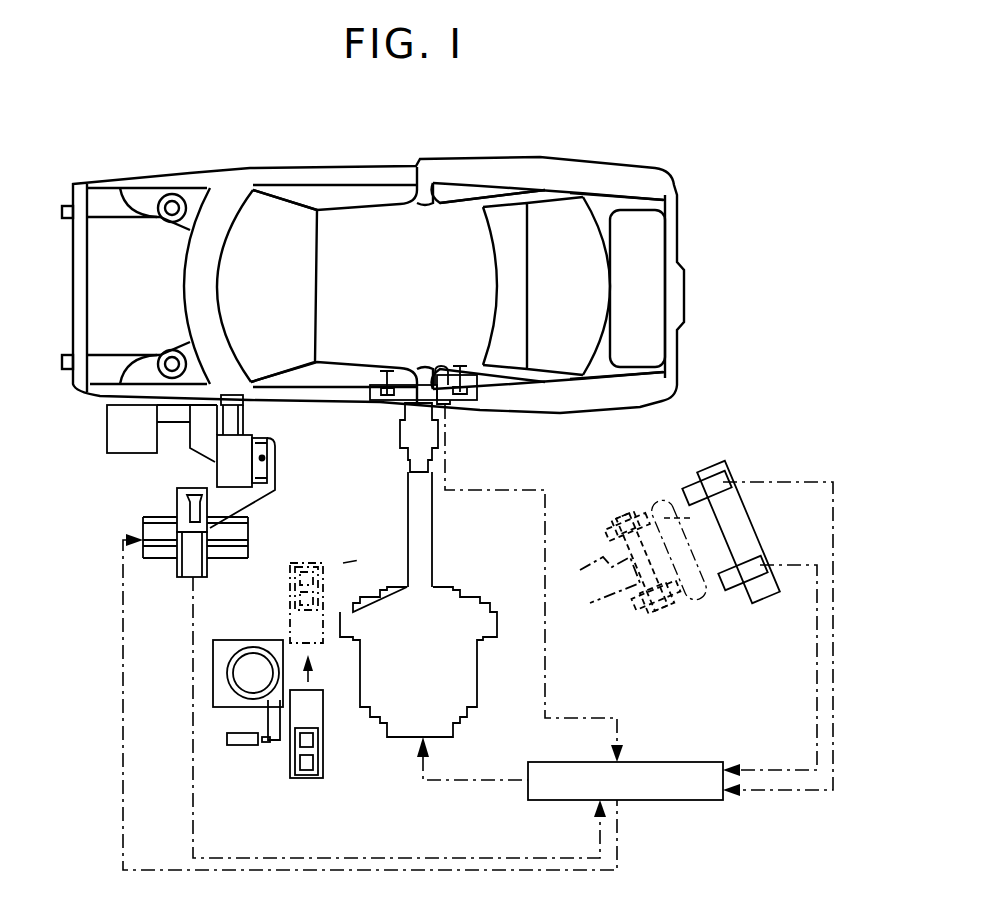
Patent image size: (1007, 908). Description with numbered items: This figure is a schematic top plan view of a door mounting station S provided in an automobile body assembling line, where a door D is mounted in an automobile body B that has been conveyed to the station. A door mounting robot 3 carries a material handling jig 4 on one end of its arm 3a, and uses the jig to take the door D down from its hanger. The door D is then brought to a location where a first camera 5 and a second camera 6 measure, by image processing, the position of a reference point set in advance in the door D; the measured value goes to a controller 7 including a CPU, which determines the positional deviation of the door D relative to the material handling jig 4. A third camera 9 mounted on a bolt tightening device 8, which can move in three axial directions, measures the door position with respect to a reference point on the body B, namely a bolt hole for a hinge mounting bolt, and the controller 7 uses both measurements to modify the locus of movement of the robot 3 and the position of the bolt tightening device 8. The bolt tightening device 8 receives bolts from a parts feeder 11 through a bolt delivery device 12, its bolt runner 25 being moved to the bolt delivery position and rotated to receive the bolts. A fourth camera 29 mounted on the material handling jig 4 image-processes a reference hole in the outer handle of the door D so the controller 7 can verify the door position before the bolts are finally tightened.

The door mounting station S is at (407, 115).
The door D is at (325, 174).
The automobile body B is at (555, 174).
The door mounting robot 3 is at (477, 683).
The arm 3a is at (403, 440).
The material handling jig 4 is at (478, 398).
The first camera 5 is at (707, 473).
The second camera 6 is at (755, 575).
The controller 7 is at (657, 800).
The bolt tightening device 8 is at (167, 560).
The third camera 9 is at (188, 513).
The parts feeder 11 is at (255, 663).
The bolt delivery device 12 is at (327, 565).
The bolt runner 25 is at (232, 468).
The fourth camera 29 is at (443, 366).